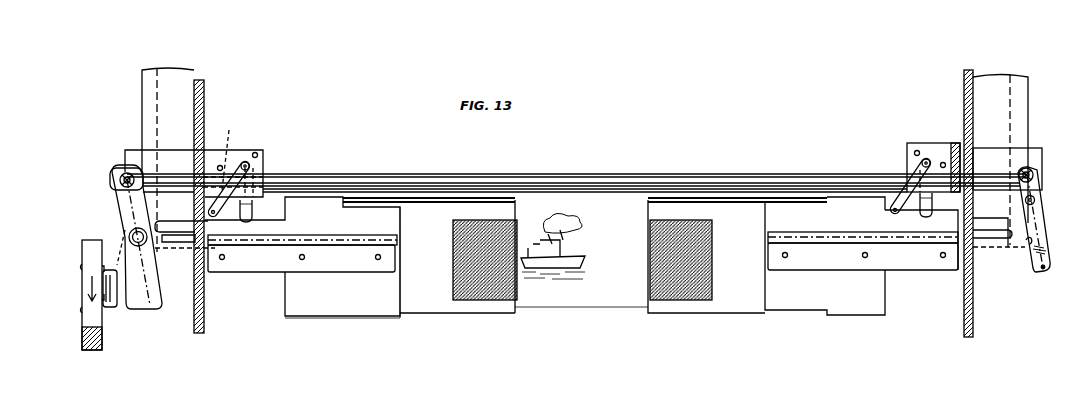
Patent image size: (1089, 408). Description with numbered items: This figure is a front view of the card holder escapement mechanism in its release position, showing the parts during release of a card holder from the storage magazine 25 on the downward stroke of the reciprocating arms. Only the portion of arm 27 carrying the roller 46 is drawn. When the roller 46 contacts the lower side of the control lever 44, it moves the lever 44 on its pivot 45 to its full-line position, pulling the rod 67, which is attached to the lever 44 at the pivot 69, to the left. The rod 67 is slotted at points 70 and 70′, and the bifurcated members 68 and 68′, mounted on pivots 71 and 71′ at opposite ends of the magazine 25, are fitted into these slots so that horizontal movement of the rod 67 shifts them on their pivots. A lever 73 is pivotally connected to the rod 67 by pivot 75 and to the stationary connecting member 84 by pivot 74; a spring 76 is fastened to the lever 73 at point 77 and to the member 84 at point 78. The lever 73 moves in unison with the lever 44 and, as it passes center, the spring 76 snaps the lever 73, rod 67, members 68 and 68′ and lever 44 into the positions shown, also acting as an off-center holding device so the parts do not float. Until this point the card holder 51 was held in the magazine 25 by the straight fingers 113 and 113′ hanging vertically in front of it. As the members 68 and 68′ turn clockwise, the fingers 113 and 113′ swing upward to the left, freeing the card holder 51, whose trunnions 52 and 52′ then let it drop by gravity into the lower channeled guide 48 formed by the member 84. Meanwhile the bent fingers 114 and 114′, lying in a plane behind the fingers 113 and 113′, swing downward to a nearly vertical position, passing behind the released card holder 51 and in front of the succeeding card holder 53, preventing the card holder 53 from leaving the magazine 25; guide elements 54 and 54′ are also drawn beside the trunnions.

The storage magazine 25 is at (582, 225).
The arm 27 is at (88, 251).
The control lever 44 is at (146, 301).
The pivot 45 is at (128, 233).
The roller 46 is at (116, 302).
The lower channeled guide 48 is at (204, 278).
The card holder 51 is at (320, 312).
The trunnion 52 is at (186, 243).
The trunnion 52′ is at (990, 240).
The card holder 53 is at (320, 202).
The guide rail 54 is at (157, 223).
The guide rail 54′ is at (1010, 236).
The rod 67 is at (528, 176).
The bifurcated member 68 is at (261, 168).
The bifurcated member 68′ is at (955, 158).
The pivot 69 is at (125, 171).
The slot 70 is at (228, 168).
The slot 70′ is at (908, 176).
The pivot 71 is at (246, 161).
The pivot 71′ is at (925, 158).
The lever 73 is at (1046, 220).
The pivot 74 is at (1037, 200).
The pivot 75 is at (1035, 176).
The spring 76 is at (1046, 250).
The fastening point 77 is at (1046, 268).
The fastening point 78 is at (1040, 238).
The connecting member 84 is at (167, 102).
The straight finger 113 is at (202, 204).
The straight finger 113′ is at (896, 206).
The bent finger 114 is at (253, 209).
The bent finger 114′ is at (935, 205).